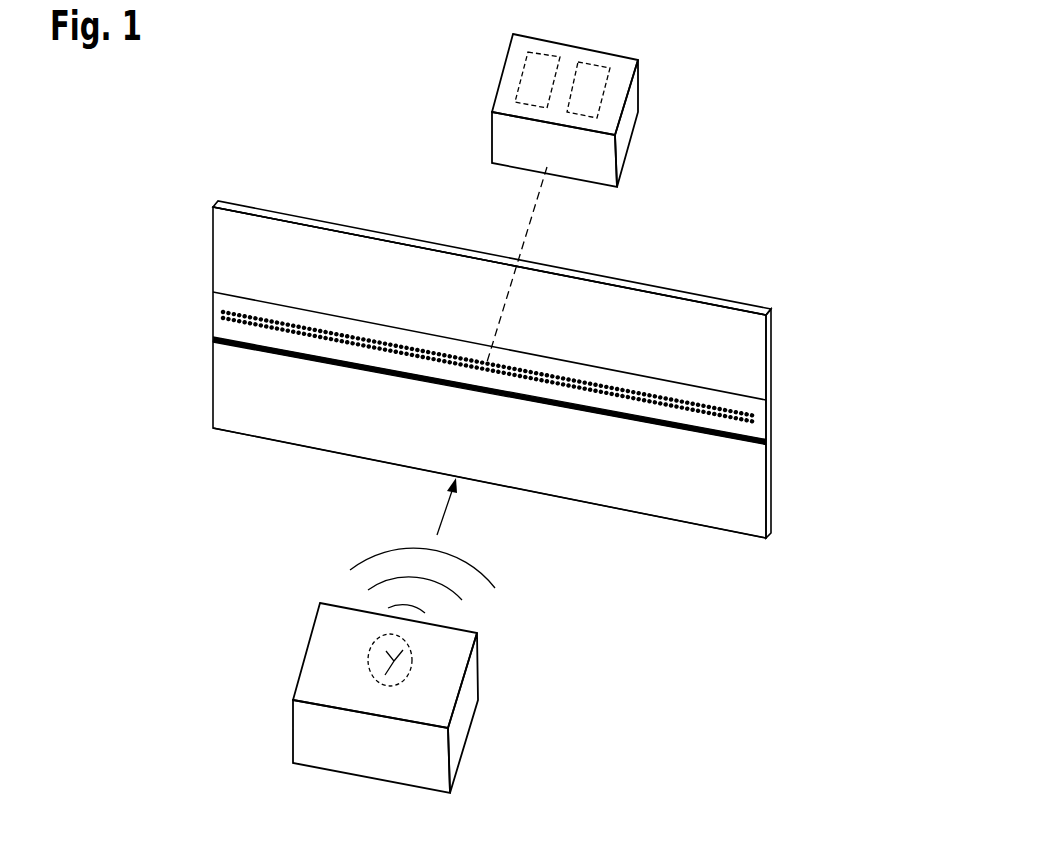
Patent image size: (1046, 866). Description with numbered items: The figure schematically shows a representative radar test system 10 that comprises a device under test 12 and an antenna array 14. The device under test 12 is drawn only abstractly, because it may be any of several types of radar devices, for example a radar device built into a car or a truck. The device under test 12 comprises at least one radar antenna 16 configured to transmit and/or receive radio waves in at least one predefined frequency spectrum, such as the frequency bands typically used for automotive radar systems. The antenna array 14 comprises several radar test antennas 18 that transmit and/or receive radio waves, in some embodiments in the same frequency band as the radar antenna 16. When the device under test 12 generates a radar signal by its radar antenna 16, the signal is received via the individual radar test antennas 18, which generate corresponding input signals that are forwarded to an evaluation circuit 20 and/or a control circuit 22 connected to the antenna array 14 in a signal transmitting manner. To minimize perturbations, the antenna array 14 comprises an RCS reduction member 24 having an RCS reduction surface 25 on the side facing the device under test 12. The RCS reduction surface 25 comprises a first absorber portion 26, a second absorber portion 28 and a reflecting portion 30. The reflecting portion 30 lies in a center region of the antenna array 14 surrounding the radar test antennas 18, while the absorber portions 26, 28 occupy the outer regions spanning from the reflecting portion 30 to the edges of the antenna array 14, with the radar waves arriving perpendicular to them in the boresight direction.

The radar test system 10 is at (147, 246).
The device under test 12 is at (318, 663).
The antenna array 14 is at (250, 190).
The radar antenna 16 is at (413, 658).
The radar test antennas 18 is at (760, 413).
The evaluation circuit 20 is at (518, 85).
The control circuit 22 is at (610, 87).
The RCS reduction member 24 is at (230, 370).
The RCS reduction surface 25 is at (489, 393).
The first absorber portion 26 is at (707, 327).
The second absorber portion 28 is at (697, 502).
The reflecting portion 30 is at (757, 437).